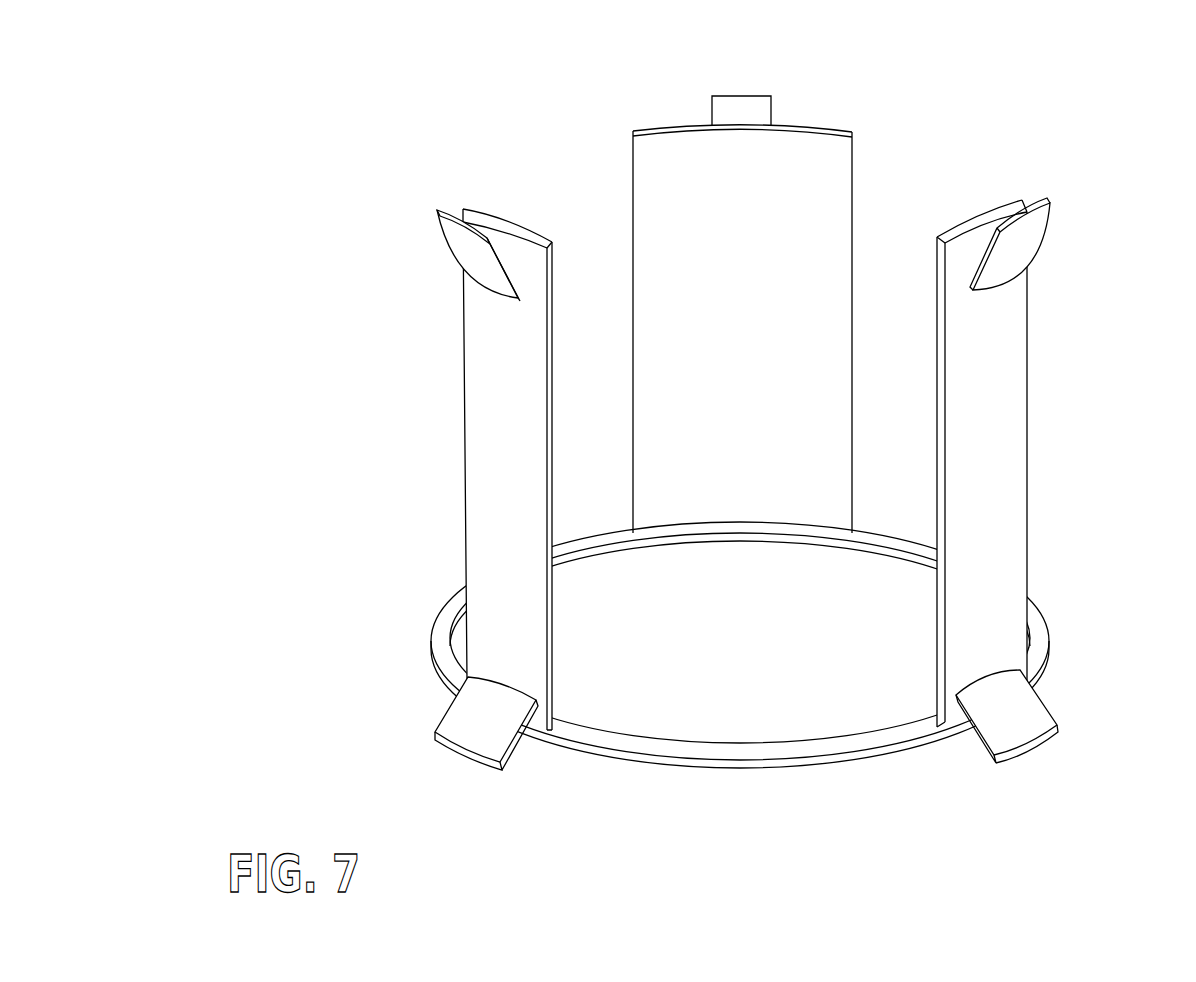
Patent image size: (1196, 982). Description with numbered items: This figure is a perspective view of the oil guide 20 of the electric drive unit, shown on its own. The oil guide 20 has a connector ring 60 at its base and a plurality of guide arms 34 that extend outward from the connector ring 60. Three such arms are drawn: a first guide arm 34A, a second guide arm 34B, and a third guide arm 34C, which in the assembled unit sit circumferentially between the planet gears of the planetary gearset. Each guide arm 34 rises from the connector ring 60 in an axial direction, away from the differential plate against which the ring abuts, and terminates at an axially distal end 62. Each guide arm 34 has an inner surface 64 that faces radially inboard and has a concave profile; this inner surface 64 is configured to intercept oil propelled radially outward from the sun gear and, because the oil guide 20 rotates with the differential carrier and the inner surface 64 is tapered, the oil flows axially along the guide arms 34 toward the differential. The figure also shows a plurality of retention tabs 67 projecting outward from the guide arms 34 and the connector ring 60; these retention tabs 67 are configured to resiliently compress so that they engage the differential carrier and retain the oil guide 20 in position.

The oil guide 20 is at (738, 433).
The guide arm 34 is at (738, 400).
The first guide arm 34A is at (757, 302).
The second guide arm 34B is at (985, 480).
The third guide arm 34C is at (482, 484).
The connector ring 60 is at (708, 750).
The axially distal end 62 is at (655, 130).
The inner surface 64 is at (670, 173).
The retention tab 67 is at (740, 107).